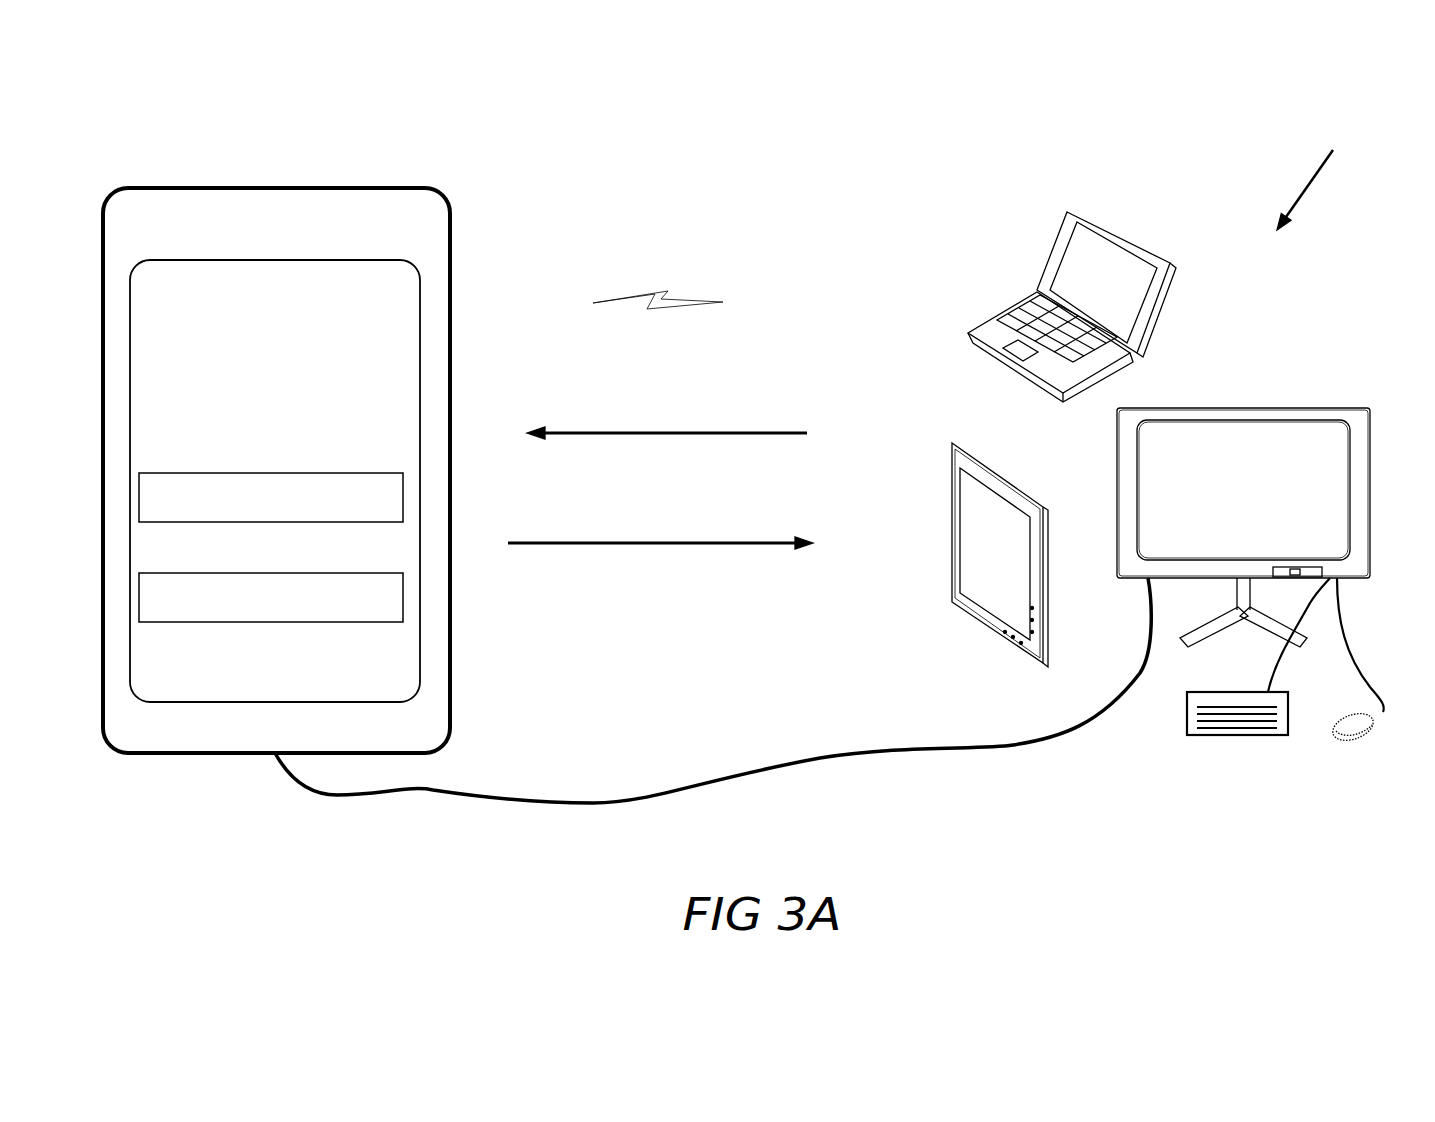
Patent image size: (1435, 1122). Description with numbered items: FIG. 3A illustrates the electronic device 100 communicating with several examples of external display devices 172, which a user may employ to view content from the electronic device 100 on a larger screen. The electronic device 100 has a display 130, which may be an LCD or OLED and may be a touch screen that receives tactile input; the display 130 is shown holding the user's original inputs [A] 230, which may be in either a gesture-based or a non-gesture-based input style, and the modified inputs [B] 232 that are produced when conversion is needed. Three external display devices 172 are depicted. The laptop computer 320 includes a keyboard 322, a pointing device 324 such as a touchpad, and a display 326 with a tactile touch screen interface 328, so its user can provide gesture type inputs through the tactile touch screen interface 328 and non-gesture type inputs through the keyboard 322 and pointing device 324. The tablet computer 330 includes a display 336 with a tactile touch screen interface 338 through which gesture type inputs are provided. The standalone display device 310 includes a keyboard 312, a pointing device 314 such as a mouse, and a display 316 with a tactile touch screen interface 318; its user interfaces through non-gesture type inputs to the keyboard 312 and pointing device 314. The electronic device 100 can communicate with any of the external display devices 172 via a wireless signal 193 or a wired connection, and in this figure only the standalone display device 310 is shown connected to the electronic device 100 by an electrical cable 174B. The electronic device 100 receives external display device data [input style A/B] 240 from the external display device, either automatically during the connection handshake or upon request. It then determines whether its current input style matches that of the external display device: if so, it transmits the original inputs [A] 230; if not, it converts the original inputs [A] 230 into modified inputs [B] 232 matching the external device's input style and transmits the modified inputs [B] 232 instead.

The electronic device 100 is at (276, 470).
The display 130 is at (275, 481).
The original inputs [A] 230 is at (476, 511).
The modified inputs [B] 232 is at (458, 591).
The external display device data [input style A/B] 240 is at (667, 405).
The wireless signal 193 is at (692, 303).
The external display devices 172 is at (1316, 172).
The laptop computer 320 is at (1140, 242).
The keyboard 322 is at (1037, 312).
The pointing device 324 is at (1018, 347).
The display 326 is at (1093, 277).
The tactile touch screen interface 328 is at (1097, 257).
The tablet computer 330 is at (958, 447).
The display 336 is at (980, 540).
The tactile touch screen interface 338 is at (982, 587).
The standalone display device 310 is at (1273, 408).
The display 316 is at (1285, 453).
The tactile touch screen interface 318 is at (1282, 498).
The keyboard 312 is at (1238, 735).
The pointing device 314 is at (1352, 748).
The electrical cable 174B is at (1090, 713).